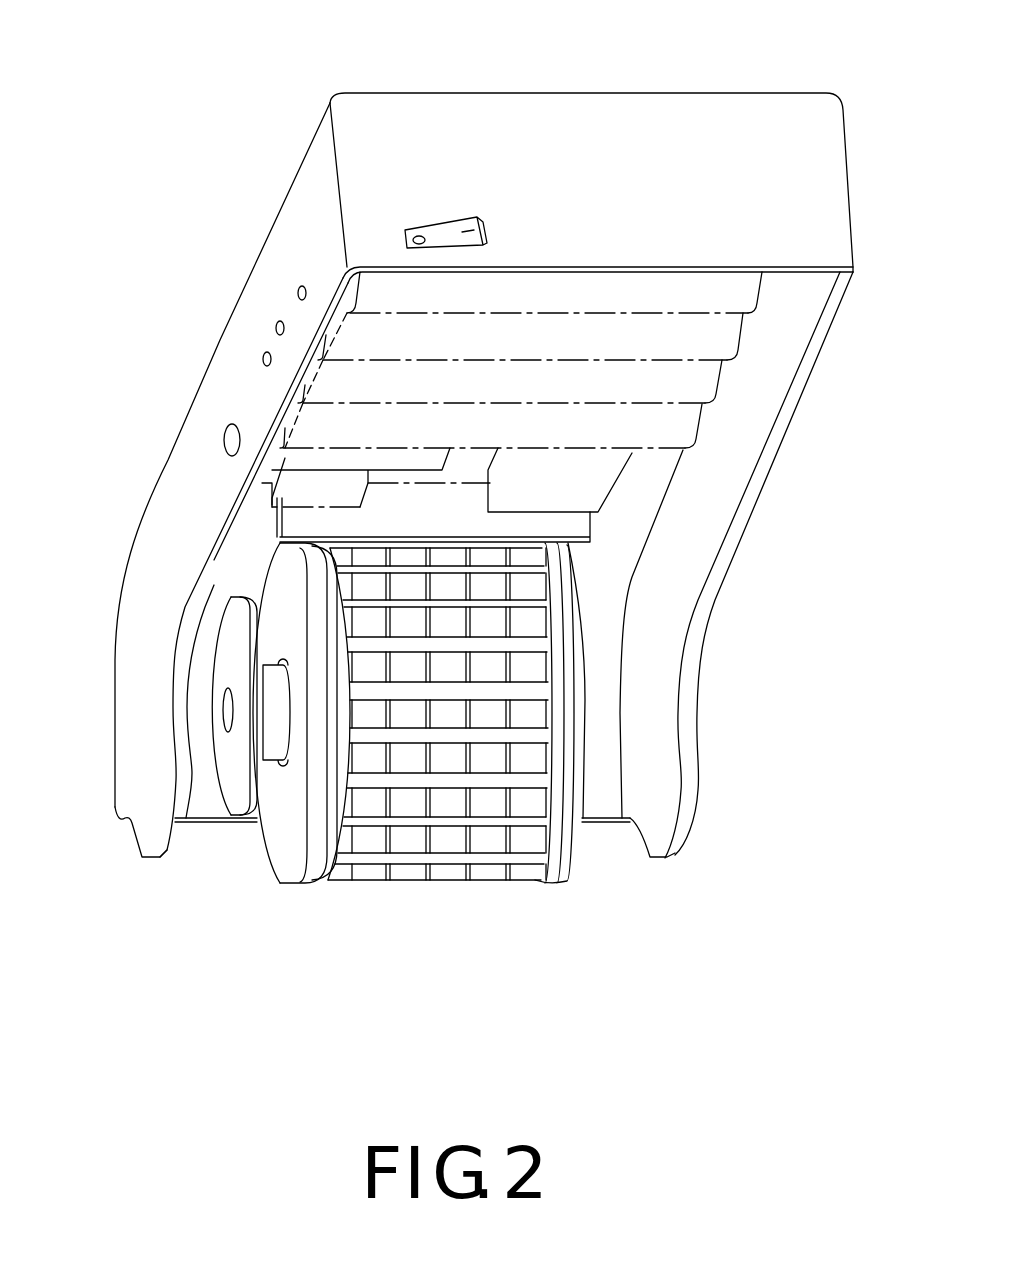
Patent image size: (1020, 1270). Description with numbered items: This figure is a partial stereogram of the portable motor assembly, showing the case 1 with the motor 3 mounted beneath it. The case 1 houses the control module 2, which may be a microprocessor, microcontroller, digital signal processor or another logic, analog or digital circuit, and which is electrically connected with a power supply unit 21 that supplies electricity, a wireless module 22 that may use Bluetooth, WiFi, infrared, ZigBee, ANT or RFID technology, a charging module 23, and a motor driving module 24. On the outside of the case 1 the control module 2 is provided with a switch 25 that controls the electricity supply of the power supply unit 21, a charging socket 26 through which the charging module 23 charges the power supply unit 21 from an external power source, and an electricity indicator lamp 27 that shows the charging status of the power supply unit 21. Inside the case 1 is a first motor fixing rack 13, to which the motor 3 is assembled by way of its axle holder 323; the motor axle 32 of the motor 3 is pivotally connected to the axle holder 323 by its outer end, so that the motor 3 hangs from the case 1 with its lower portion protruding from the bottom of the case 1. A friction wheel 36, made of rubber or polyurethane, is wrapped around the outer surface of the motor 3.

The case 1 is at (652, 117).
The control module 2 is at (457, 470).
The power supply unit 21 is at (707, 373).
The wireless module 22 is at (273, 497).
The charging module 23 is at (285, 458).
The motor driving module 24 is at (600, 465).
The switch 25 is at (441, 230).
The charging socket 26 is at (226, 440).
The electricity indicator lamp 27 is at (277, 322).
The motor 3 is at (280, 882).
The motor axle 32 is at (283, 857).
The axle holder 323 is at (260, 823).
The friction wheel 36 is at (477, 838).
The first motor fixing rack 13 is at (220, 810).